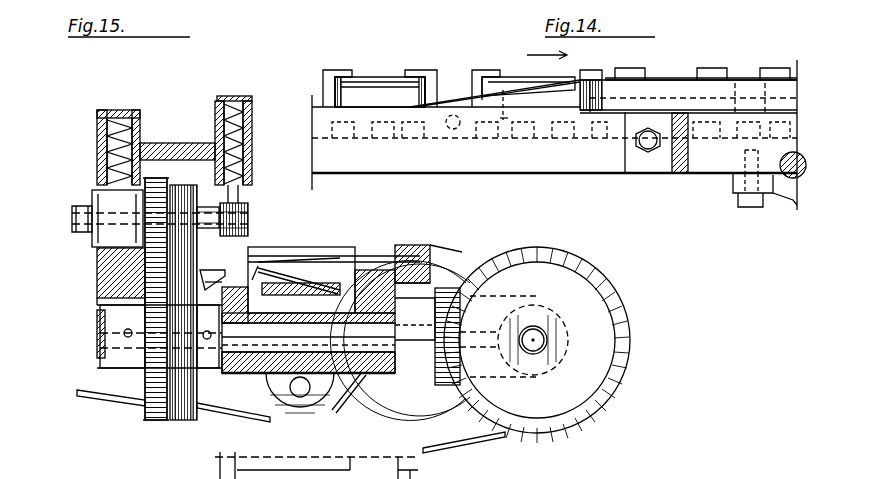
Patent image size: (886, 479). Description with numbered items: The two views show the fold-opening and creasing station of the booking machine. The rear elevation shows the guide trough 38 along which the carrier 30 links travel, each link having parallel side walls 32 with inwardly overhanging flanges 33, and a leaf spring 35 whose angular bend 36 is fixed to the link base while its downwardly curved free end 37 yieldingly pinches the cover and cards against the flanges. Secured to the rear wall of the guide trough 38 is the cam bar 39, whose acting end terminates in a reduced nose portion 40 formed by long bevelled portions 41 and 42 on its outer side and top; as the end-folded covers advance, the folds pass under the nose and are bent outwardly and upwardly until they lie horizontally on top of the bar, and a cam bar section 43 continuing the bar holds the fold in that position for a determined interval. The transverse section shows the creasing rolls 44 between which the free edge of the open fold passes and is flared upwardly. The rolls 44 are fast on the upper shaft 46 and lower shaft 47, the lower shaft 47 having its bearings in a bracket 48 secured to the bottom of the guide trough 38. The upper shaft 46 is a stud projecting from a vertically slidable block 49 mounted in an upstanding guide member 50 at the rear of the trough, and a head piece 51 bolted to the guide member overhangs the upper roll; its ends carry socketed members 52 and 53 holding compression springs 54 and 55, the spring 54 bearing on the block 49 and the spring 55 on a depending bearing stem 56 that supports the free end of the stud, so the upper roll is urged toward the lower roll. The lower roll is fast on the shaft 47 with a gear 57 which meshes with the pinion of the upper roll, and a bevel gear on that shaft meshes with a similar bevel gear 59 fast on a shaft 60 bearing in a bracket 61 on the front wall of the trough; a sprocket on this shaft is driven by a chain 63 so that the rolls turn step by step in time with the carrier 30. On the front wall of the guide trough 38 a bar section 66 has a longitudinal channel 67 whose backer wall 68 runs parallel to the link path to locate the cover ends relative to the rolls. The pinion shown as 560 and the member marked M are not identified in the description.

In FIG. 14, the slide bar / carriage body 30 is at (482, 135).
In FIG. 15, the slide bar / carriage body 30 is at (360, 258).
In FIG. 14, the side walls 32 is at (330, 90).
In FIG. 14, the inwardly overhanging flanges 33 is at (333, 70).
In FIG. 15, the inwardly overhanging flanges 33 is at (292, 256).
In FIG. 15, the leaf spring 35 is at (300, 278).
In FIG. 15, the angular bend 36 is at (397, 255).
In FIG. 15, the downwardly curved end 37 is at (258, 290).
In FIG. 14, the guide trough 38 is at (597, 165).
In FIG. 14, the cam bar 39 is at (680, 92).
In FIG. 15, the cam bar 39 is at (207, 280).
In FIG. 14, the nose portion 40 is at (415, 106).
In FIG. 15, the nose portion 40 is at (215, 457).
In FIG. 14, the bevelled portion 41 is at (485, 103).
In FIG. 14, the bevelled portion 42 is at (507, 88).
In FIG. 14, the cam bar section 43 is at (775, 95).
In FIG. 15, the creasing rolls 44 is at (190, 180).
In FIG. 15, the upper shaft 46 is at (250, 222).
In FIG. 14, the lower shaft 47 is at (780, 178).
In FIG. 15, the lower shaft 47 is at (108, 333).
In FIG. 14, the bracket 48 is at (780, 195).
In FIG. 15, the bracket 48 is at (378, 345).
In FIG. 15, the vertically slidable block 49 is at (92, 193).
In FIG. 14, the guide member 50 is at (680, 175).
In FIG. 15, the guide member 50 is at (112, 273).
In FIG. 15, the head piece 51 is at (160, 178).
In FIG. 15, the socketed member 52 is at (112, 130).
In FIG. 15, the socketed member 53 is at (245, 105).
In FIG. 15, the compression spring 54 is at (110, 128).
In FIG. 15, the compression spring 55 is at (248, 130).
In FIG. 15, the bearing stem 56 is at (253, 162).
In FIG. 15, the gear 57 is at (110, 258).
In FIG. 15, the bevel gear 59 is at (634, 346).
In FIG. 15, the shaft 60 is at (545, 338).
In FIG. 15, the bracket 61 is at (557, 367).
In FIG. 15, the chain 63 is at (490, 436).
In FIG. 15, the bar section 66 is at (468, 250).
In FIG. 15, the longitudinal channel 67 is at (430, 256).
In FIG. 15, the backer wall 68 is at (440, 255).
In FIG. 15, the gear 560 is at (152, 178).
In FIG. 15, the plate M is at (323, 262).